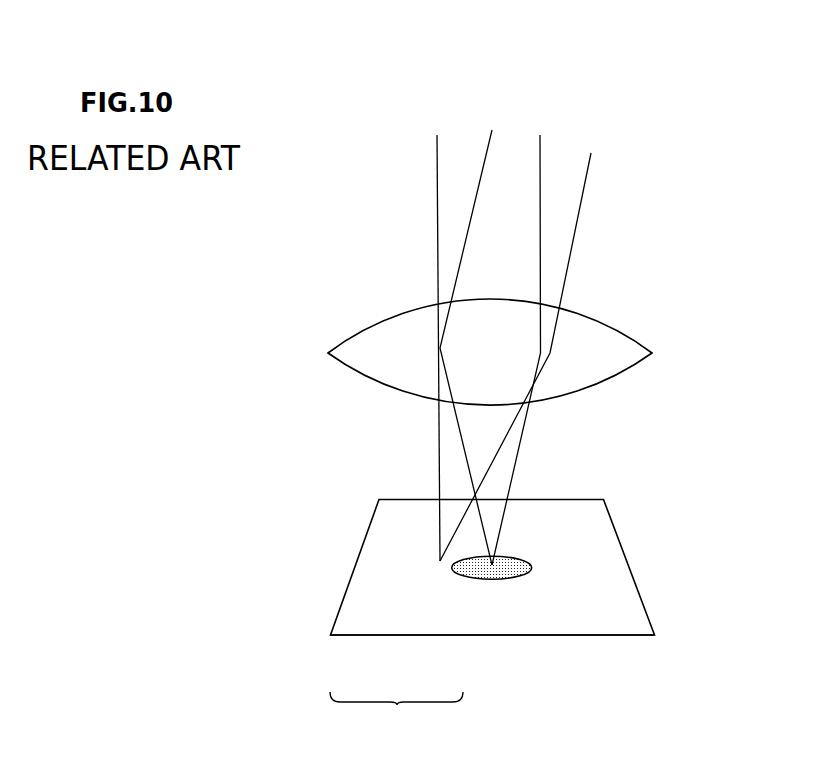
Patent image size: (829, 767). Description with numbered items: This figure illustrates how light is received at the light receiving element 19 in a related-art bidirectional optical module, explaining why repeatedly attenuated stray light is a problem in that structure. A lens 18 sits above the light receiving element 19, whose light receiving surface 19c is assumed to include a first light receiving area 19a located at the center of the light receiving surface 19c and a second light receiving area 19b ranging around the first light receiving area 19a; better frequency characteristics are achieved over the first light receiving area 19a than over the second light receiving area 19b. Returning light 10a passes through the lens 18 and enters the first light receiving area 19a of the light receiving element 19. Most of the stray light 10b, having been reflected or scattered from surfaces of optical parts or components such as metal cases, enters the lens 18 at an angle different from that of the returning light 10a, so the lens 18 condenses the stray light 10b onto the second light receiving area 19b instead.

The returning light 10a is at (446, 181).
The stray light 10b is at (575, 187).
The lens 18 is at (620, 329).
The light receiving element 19 is at (673, 568).
The first light receiving area 19a is at (482, 573).
The second light receiving area 19b is at (358, 635).
The light receiving surface 19c is at (396, 713).